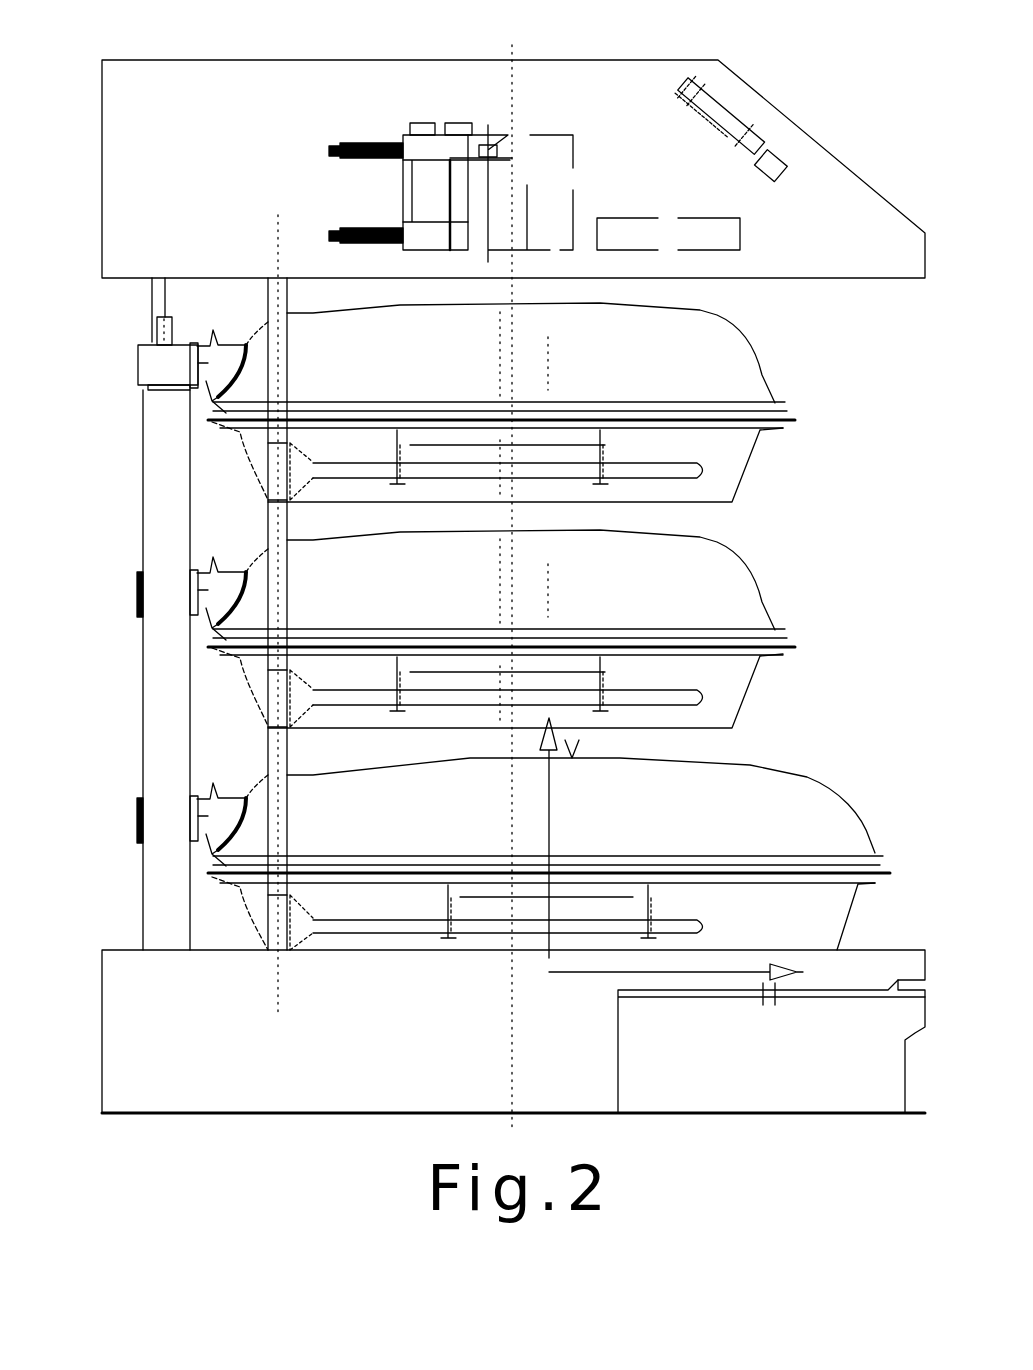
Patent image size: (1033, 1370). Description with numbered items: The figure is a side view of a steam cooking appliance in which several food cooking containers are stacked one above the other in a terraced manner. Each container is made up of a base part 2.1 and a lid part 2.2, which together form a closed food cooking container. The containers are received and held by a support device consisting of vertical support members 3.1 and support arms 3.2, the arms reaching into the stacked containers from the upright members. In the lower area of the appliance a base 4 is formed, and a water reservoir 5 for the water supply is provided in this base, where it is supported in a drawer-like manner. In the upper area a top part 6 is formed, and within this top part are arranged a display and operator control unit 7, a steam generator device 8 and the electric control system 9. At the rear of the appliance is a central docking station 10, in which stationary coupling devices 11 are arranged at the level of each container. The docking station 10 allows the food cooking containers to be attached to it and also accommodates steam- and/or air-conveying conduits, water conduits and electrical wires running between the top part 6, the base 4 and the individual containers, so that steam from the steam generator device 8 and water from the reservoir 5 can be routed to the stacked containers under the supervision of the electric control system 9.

The base part 2.1 is at (722, 448).
The lid part 2.2 is at (768, 375).
The vertical support members 3.1 is at (265, 760).
The support arms 3.2 is at (710, 468).
The base 4 is at (212, 1093).
The water reservoir 5 is at (730, 1077).
The top part 6 is at (277, 78).
The display and operator control unit 7 is at (785, 128).
The steam generator device 8 is at (447, 148).
The electric control system 9 is at (638, 225).
The central docking station 10 is at (170, 470).
The stationary coupling devices 11 is at (190, 585).